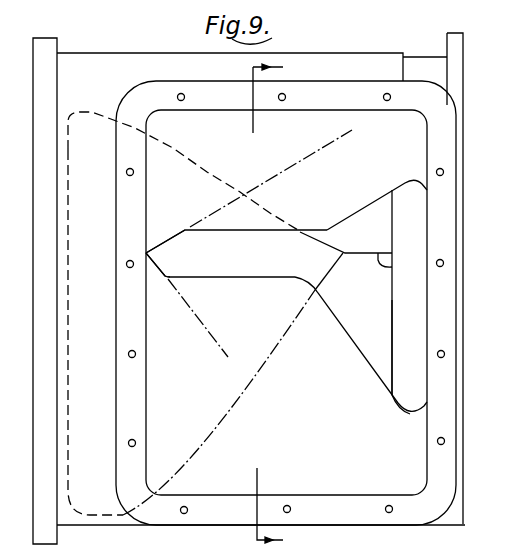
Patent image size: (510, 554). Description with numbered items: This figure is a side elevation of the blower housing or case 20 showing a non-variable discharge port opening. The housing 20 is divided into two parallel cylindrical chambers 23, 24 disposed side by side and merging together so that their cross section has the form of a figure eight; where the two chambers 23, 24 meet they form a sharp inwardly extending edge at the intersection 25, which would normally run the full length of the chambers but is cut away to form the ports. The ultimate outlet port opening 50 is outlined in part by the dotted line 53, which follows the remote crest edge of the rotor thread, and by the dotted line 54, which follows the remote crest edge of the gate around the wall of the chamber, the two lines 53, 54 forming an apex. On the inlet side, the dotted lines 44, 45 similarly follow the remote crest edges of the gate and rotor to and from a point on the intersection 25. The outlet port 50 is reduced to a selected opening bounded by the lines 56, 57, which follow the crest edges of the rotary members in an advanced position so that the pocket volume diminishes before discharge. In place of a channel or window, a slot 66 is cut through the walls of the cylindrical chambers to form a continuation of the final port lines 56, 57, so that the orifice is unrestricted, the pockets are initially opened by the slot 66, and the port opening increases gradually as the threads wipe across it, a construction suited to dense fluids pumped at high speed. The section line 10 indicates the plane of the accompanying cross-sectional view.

The section line 10- 10 is at (313, 75).
The housing or case 20 is at (102, 83).
The cylindrical chamber 23 is at (378, 213).
The cylindrical chamber 24 is at (383, 335).
The intersection 25 is at (392, 267).
The dotted line 44 is at (212, 173).
The dotted line 45 is at (328, 277).
The ultimate outlet port opening 50 is at (334, 477).
The dotted line 53 is at (163, 266).
The dotted line 54 is at (168, 243).
The reduced port line 56 is at (347, 339).
The reduced port line 57 is at (382, 197).
The slot 66 is at (250, 232).